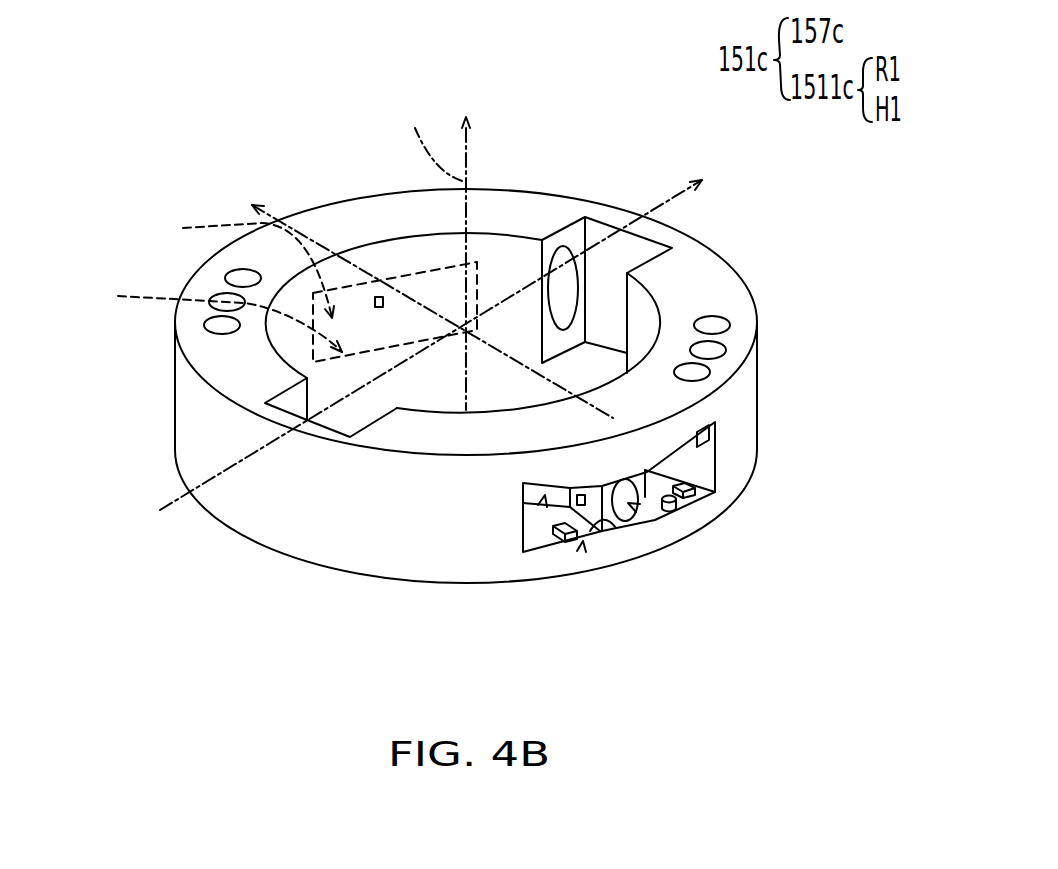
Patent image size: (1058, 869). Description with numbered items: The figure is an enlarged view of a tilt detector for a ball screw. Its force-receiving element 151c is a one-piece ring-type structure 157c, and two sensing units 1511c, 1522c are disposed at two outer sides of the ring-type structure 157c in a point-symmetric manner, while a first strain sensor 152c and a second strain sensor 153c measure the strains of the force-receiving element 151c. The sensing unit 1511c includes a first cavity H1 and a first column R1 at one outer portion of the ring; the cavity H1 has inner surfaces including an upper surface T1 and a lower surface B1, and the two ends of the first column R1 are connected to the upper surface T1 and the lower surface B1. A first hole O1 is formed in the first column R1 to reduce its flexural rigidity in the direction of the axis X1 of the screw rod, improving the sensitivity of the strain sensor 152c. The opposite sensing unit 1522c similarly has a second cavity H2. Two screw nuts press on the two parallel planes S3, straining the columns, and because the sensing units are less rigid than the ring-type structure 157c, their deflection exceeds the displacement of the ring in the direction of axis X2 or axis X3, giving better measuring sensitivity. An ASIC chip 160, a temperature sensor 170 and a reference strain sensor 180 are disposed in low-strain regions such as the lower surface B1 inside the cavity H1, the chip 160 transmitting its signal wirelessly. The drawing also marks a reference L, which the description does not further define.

The force-receiving element 151c is at (537, 215).
The ring-type structure 157c is at (267, 518).
The sensing unit 1511c is at (583, 541).
The second strain sensor 153c is at (379, 297).
The sensing unit 1522c is at (193, 314).
The first strain sensor 152c is at (582, 495).
The ASIC chip 160 is at (695, 497).
The temperature sensor 170 is at (676, 510).
The reference strain sensor 180 is at (563, 555).
The first column R1 is at (708, 432).
The first cavity H1 is at (705, 465).
The second cavity H2 is at (241, 262).
The parallel planes S3 is at (718, 286).
The upper surface T1 is at (545, 495).
The lower surface B1 is at (626, 545).
The first hole O1 is at (628, 503).
The optical axis L is at (435, 136).
The axis of the screw rod X1 is at (465, 241).
The axis X2 is at (449, 333).
The axis X3 is at (414, 296).